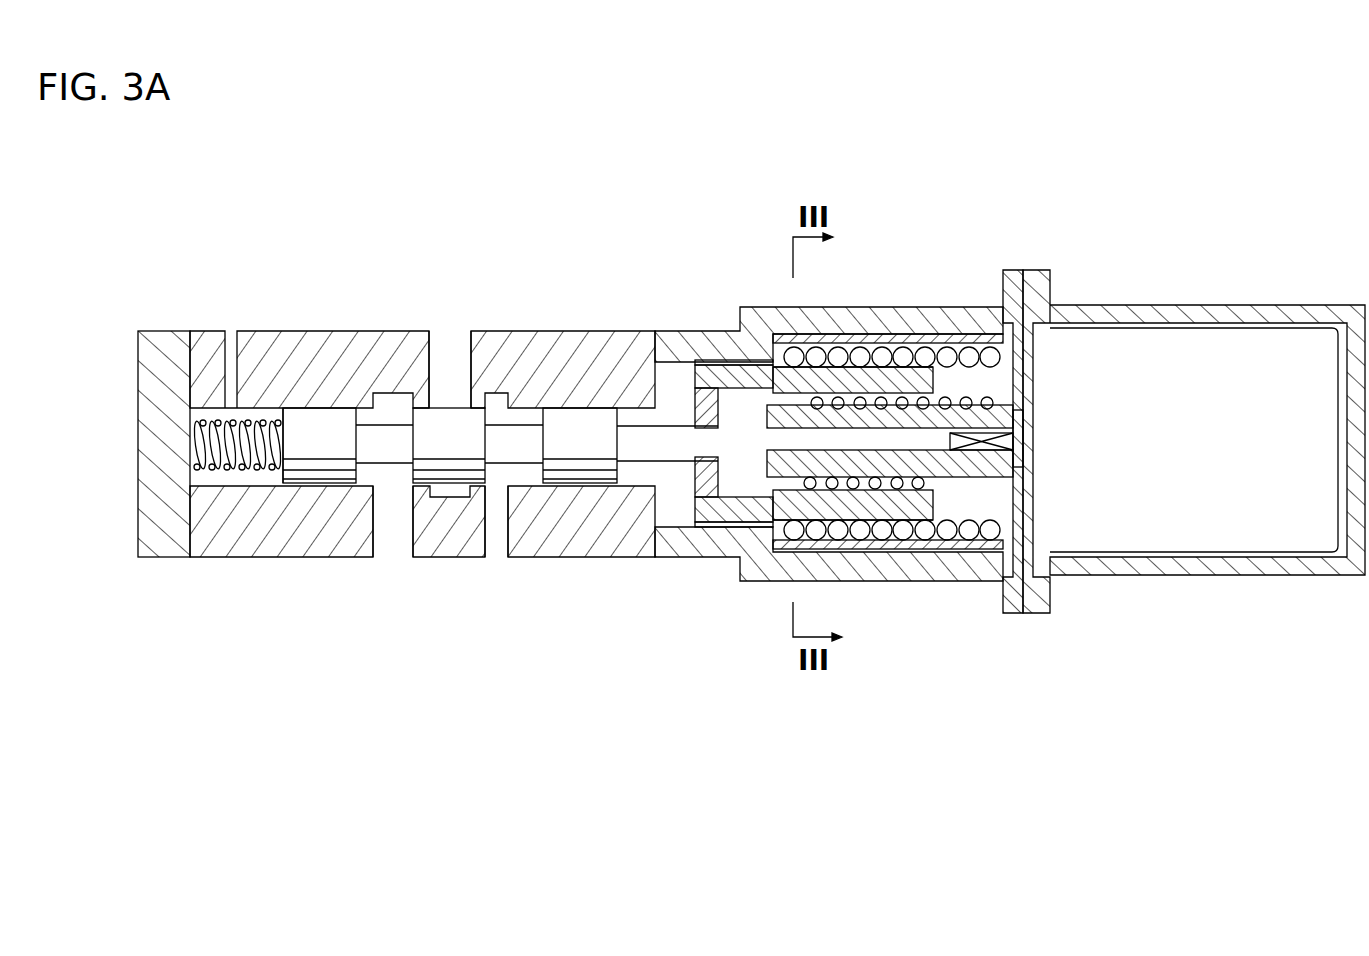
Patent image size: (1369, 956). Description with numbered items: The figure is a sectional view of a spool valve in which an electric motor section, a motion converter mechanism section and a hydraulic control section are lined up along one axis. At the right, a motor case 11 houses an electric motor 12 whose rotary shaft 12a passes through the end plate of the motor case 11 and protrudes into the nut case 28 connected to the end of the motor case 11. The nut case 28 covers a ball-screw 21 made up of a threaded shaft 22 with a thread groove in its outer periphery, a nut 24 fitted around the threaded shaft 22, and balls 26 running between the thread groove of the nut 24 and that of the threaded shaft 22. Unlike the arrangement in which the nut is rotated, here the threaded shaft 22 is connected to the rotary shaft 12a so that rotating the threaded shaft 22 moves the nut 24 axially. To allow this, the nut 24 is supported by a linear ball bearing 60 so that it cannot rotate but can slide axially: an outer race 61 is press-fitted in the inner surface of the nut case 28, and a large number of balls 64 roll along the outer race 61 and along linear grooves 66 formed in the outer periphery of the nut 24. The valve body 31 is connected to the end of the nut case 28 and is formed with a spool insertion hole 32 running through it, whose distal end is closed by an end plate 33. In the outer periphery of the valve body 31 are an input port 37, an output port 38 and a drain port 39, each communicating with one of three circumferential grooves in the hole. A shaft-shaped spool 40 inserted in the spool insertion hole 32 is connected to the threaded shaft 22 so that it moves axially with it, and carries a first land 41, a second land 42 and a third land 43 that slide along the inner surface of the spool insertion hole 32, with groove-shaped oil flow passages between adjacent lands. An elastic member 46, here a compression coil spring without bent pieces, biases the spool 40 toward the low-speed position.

The motor case 11 is at (1262, 305).
The electric motor 12 is at (1175, 338).
The rotary shaft 12a is at (1013, 442).
The ball-screw 21 is at (757, 360).
The threaded shaft 22 is at (987, 400).
The nut 24 is at (940, 393).
The balls 26 is at (887, 405).
The nut case 28 is at (723, 355).
The valve body 31 is at (208, 331).
The spool insertion hole 32 is at (295, 417).
The end plate 33 is at (160, 332).
The input port 37 is at (500, 548).
The output port 38 is at (451, 340).
The drain port 39 is at (394, 548).
The spool 40 is at (424, 407).
The first land 41 is at (578, 420).
The second land 42 is at (474, 420).
The third land 43 is at (327, 420).
The elastic member 46 is at (195, 452).
The linear ball bearing 60 is at (968, 552).
The outer race 61 is at (872, 552).
The balls 64 is at (846, 347).
The linear grooves 66 is at (755, 372).